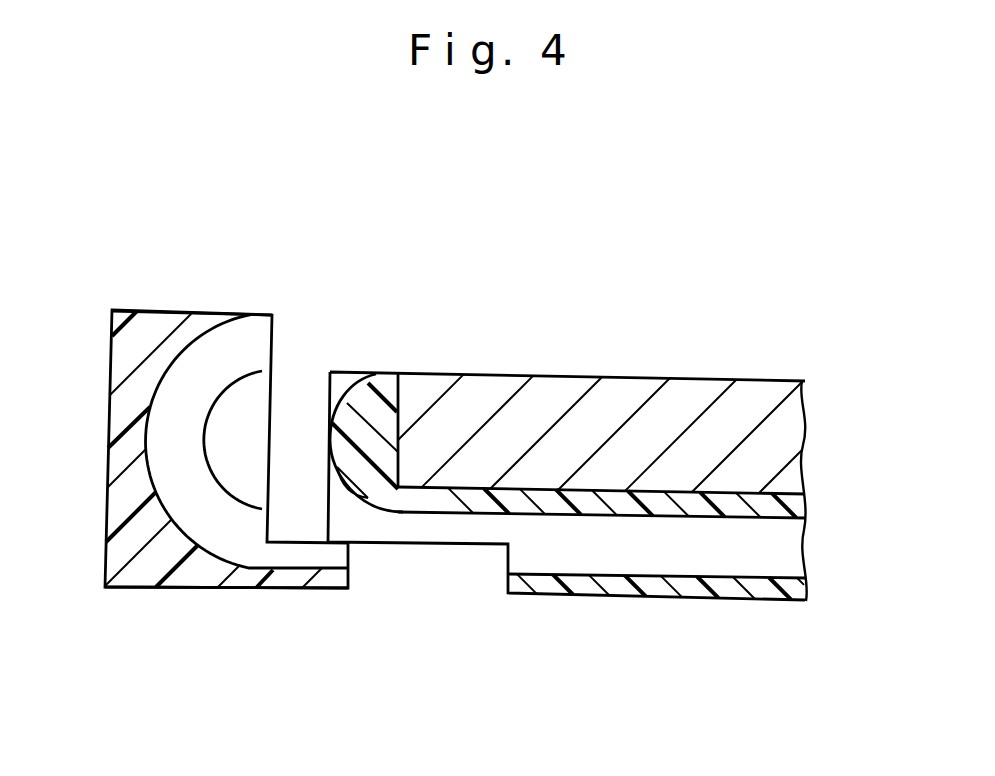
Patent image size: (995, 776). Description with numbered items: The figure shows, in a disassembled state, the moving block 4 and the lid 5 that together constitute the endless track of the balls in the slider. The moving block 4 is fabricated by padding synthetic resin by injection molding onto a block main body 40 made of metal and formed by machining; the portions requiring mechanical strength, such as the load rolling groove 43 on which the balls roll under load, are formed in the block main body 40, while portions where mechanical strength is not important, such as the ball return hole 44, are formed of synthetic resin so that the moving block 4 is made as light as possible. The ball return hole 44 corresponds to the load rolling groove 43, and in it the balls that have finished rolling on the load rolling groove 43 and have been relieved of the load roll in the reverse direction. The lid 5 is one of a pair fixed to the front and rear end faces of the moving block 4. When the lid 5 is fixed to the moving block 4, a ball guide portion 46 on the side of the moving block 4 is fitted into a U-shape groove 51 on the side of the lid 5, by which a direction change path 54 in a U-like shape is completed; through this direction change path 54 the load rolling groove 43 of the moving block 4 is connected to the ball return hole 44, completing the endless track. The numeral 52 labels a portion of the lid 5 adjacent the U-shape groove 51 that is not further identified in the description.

The moving block 4 is at (735, 605).
The block main body 40 is at (783, 417).
The load rolling groove 43 is at (622, 378).
The ball return hole 44 is at (772, 578).
The ball guide portion 46 is at (371, 403).
The lid 5 is at (123, 363).
The U-shape groove 51 is at (173, 497).
The upper wall 52 is at (199, 320).
The direction change path 54 is at (225, 537).